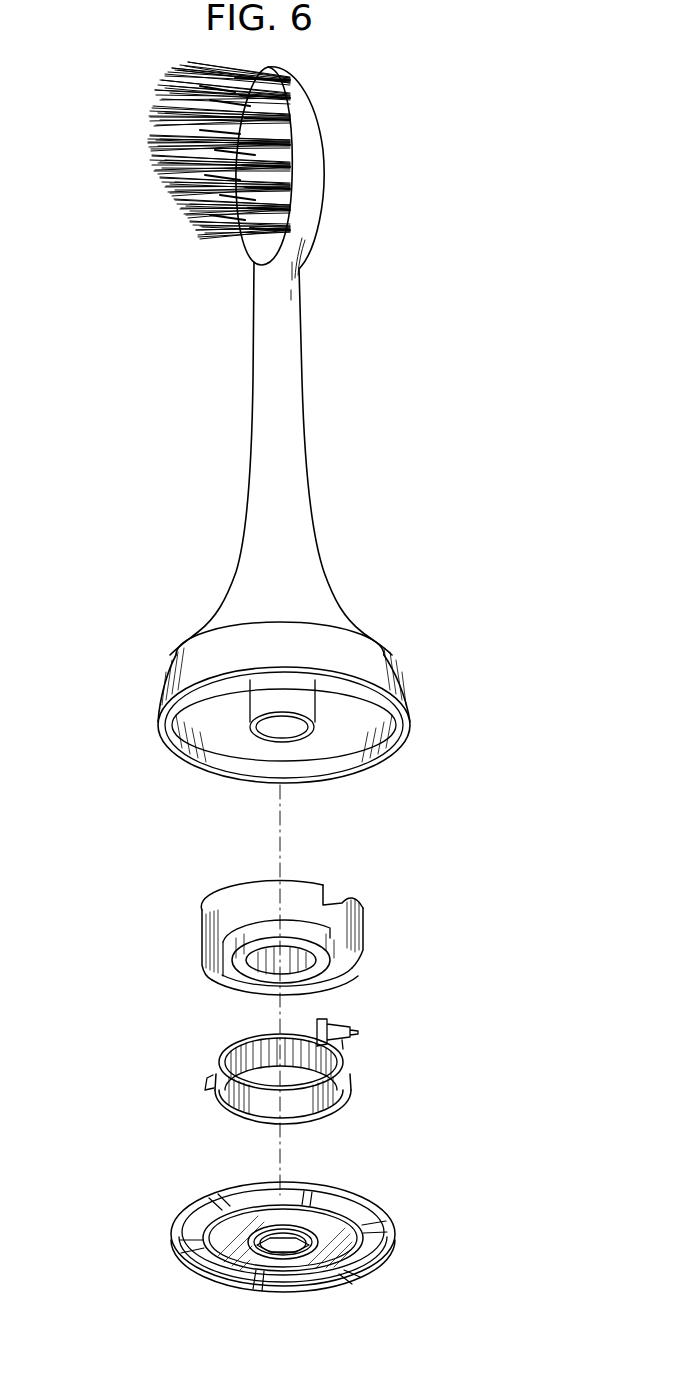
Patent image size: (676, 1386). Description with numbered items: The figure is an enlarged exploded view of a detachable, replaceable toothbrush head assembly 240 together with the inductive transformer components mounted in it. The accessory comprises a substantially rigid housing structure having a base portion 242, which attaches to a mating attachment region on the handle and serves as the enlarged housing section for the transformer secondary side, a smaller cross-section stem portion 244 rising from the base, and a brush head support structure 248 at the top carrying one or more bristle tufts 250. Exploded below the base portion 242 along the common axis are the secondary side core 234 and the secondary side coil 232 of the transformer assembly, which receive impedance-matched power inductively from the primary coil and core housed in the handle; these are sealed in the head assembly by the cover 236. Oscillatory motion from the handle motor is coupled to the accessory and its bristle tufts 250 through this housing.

The toothbrush head assembly 240 is at (488, 792).
The brush head support structure 248 is at (318, 132).
The bristle tufts 250 is at (135, 102).
The stem portion 244 is at (303, 437).
The base portion 242 is at (388, 660).
The core 234 is at (357, 962).
The secondary side coil 232 is at (345, 1100).
The cover 236 is at (385, 1212).